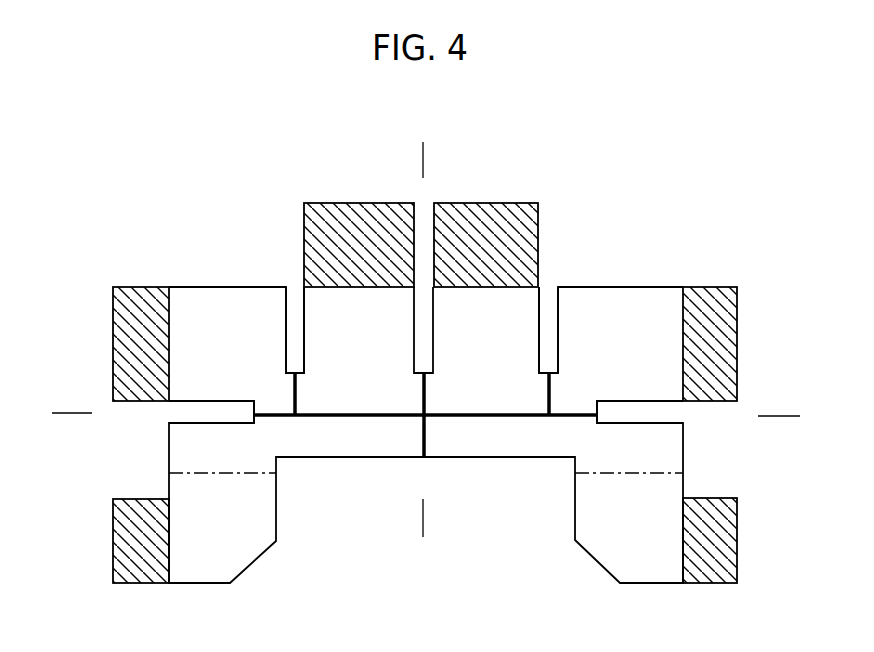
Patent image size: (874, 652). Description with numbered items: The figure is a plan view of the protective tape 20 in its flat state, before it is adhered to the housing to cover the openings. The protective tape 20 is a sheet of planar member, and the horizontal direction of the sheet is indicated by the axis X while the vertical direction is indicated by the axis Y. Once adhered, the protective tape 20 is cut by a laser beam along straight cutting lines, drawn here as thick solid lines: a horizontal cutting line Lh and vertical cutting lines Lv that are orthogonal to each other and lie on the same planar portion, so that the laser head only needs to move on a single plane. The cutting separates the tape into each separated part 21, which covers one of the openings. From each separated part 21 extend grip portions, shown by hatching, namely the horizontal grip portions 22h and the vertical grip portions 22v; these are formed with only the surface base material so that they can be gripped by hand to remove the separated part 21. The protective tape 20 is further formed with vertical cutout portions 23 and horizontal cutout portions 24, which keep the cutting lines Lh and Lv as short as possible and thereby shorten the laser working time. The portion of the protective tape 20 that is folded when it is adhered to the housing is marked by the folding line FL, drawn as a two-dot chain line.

The protective tape 20 is at (593, 284).
The separated part 21 is at (313, 307).
The horizontal grip portion 22h is at (140, 300).
The vertical grip portion 22v is at (503, 202).
The vertical cutout portion 23 is at (557, 315).
The horizontal cutout portion 24 is at (650, 402).
The horizontal cutting line Lh is at (500, 417).
The vertical cutting line Lv is at (427, 437).
The folding line FL is at (193, 472).
The horizontal direction X is at (424, 416).
The vertical direction Y is at (422, 344).